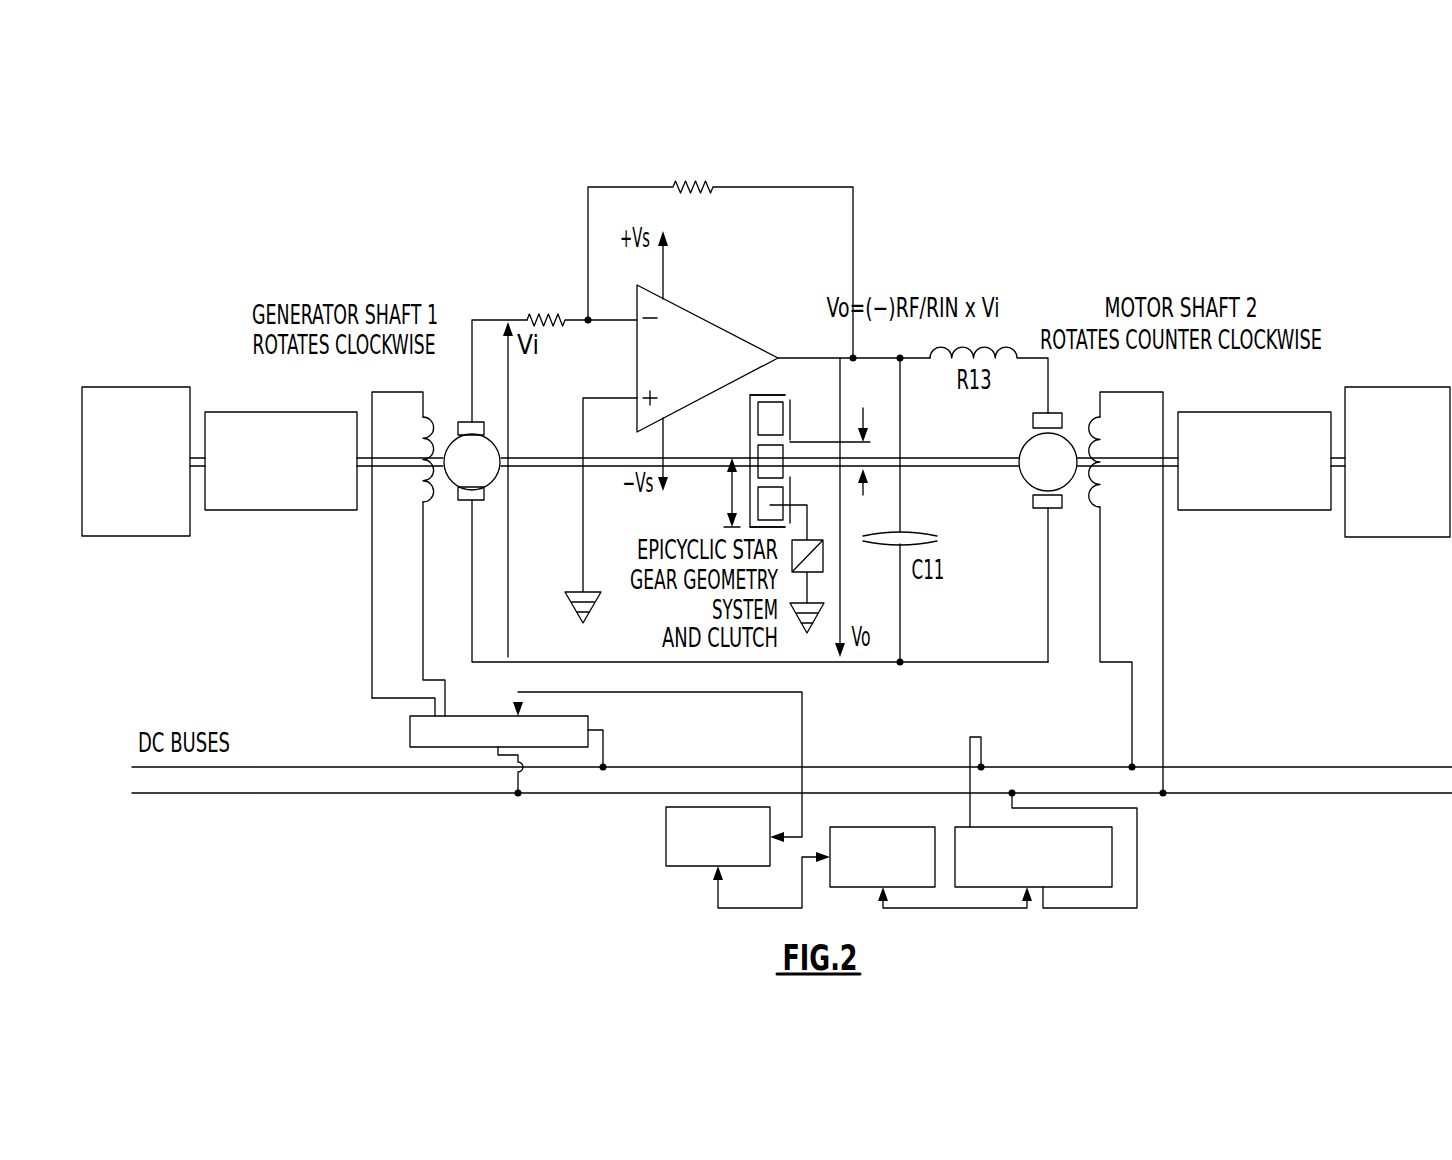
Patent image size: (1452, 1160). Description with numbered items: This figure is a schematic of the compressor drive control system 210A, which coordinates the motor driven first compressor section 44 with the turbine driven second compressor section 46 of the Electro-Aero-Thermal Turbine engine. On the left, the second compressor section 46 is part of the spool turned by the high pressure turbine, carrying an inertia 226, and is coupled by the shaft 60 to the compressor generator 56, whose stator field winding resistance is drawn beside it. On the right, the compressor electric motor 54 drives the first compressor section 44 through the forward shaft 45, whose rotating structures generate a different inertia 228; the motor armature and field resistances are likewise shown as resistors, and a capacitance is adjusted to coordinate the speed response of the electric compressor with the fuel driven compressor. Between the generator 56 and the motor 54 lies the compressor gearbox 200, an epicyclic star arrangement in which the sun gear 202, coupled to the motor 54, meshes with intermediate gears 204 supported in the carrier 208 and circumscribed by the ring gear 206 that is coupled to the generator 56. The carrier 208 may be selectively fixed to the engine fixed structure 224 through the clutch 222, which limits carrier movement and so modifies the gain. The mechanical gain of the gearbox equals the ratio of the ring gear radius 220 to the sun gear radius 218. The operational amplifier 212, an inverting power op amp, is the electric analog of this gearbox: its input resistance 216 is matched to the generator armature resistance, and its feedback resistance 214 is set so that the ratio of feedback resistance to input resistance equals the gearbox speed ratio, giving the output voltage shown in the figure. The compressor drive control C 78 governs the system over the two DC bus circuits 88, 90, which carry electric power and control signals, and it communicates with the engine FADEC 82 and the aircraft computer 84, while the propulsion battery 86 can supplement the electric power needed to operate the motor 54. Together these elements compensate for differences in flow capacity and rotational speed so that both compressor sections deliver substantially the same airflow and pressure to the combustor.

The compressor drive control system 210A is at (964, 188).
The feedback resistance R_F 214 is at (680, 152).
The input resistance R_IN 216 is at (535, 282).
The operational amplifier 212 is at (705, 310).
The compressor gearbox 200 is at (790, 390).
The sun gear 202 is at (777, 452).
The intermediate gears 204 is at (772, 418).
The ring gear 206 is at (750, 426).
The carrier 208 is at (792, 490).
The sun gear radius 218 is at (865, 495).
The ring gear radius 220 is at (732, 492).
The clutch 222 is at (823, 560).
The fixed structure 224 is at (795, 636).
The inertia of first spool 226 is at (146, 537).
The inertia of rotating structures 228 is at (1360, 538).
The second compressor section 46 is at (252, 511).
The first compressor section 44 is at (1230, 412).
The forward shaft 45 is at (1158, 450).
The compressor electric motor 54 is at (1028, 486).
The compressor generator 56 is at (492, 482).
The shaft 60 is at (407, 468).
The compressor drive control C 78 is at (410, 730).
The engine FADEC 82 is at (666, 830).
The aircraft computer 84 is at (878, 827).
The propulsion battery 86 is at (1112, 848).
The DC bus 88 is at (975, 457).
The DC bus 90 is at (310, 760).